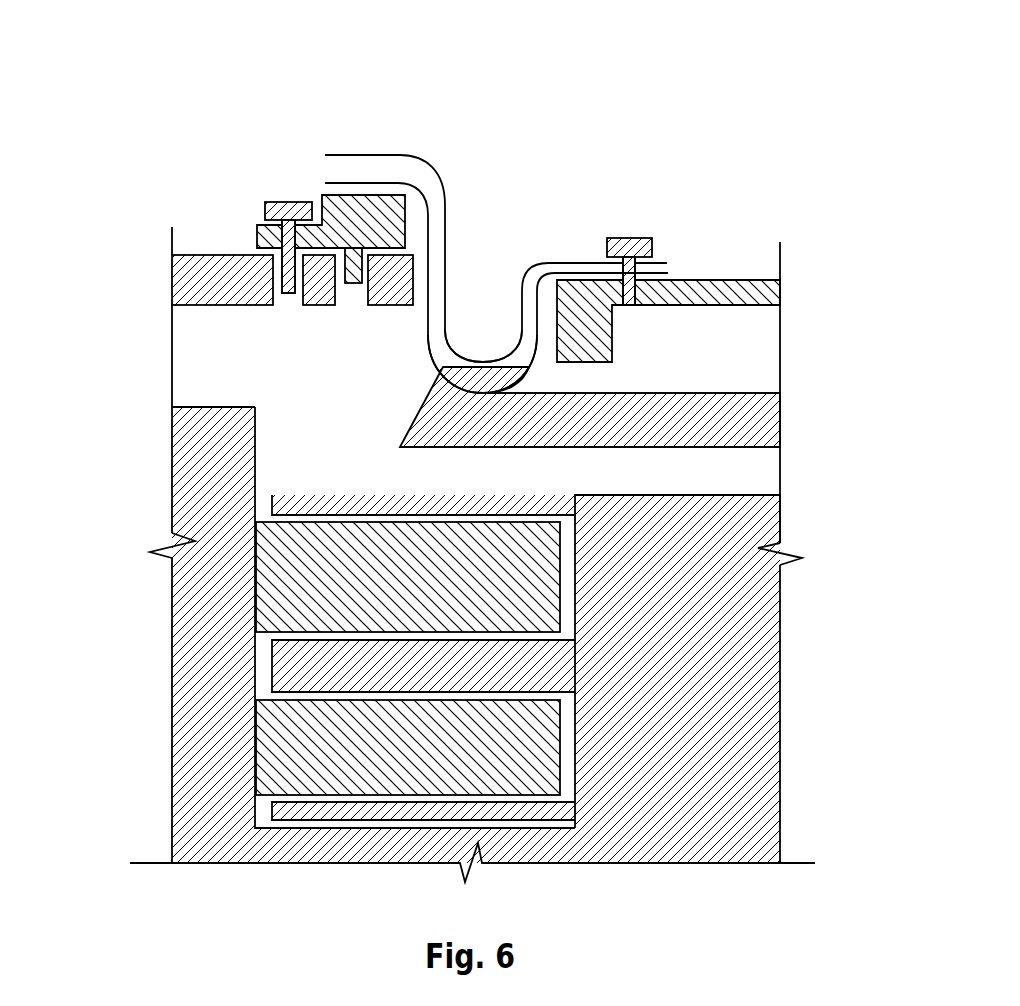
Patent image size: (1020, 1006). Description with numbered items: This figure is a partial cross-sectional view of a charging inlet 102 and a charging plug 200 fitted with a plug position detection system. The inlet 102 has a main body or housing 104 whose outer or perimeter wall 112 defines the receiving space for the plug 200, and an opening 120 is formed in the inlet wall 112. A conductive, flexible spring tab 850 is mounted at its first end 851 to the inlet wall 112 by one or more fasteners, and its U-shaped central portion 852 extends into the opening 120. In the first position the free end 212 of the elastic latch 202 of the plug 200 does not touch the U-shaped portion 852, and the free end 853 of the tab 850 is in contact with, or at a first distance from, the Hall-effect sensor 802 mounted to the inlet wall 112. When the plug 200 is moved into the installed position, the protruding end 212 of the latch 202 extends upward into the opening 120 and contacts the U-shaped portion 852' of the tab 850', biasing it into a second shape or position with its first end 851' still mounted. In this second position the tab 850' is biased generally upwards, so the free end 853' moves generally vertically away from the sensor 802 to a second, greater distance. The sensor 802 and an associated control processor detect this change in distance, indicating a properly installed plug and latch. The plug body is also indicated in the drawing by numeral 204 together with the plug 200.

The flexible spring tab 850 is at (470, 185).
The free end of the tab 853 is at (469, 200).
The flexible spring tab in second position 850' is at (341, 119).
The free end of the tab in second position 853' is at (341, 133).
The first end of the tab 851 is at (651, 229).
The first end of the tab in second position 851' is at (627, 193).
The U-shaped central portion 852 is at (516, 274).
The U-shaped central portion in second position 852' is at (507, 289).
The Hall-effect sensor 802 is at (356, 210).
The main body or housing 104 is at (185, 285).
The outer or perimeter wall 112 is at (185, 285).
The opening 120 is at (368, 335).
The free end of the latch 212 is at (442, 407).
The elastic latch 202 is at (747, 423).
The charging inlet 102 is at (207, 637).
The charging plug 200 is at (690, 665).
The electrode 204 is at (690, 665).